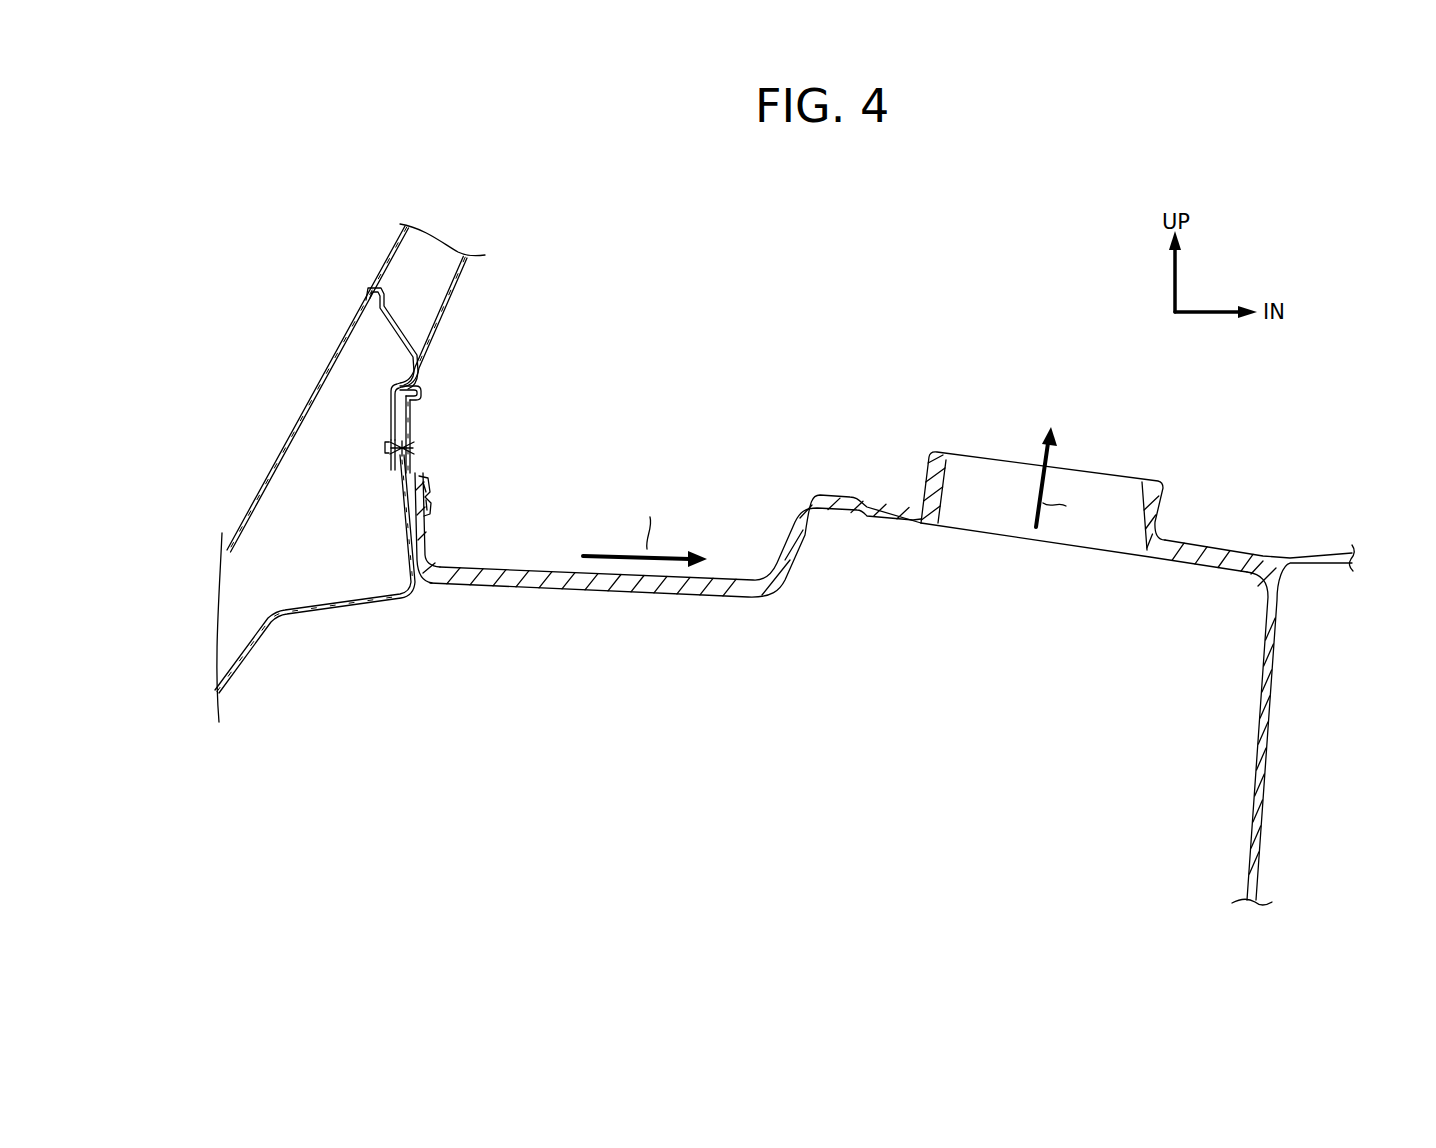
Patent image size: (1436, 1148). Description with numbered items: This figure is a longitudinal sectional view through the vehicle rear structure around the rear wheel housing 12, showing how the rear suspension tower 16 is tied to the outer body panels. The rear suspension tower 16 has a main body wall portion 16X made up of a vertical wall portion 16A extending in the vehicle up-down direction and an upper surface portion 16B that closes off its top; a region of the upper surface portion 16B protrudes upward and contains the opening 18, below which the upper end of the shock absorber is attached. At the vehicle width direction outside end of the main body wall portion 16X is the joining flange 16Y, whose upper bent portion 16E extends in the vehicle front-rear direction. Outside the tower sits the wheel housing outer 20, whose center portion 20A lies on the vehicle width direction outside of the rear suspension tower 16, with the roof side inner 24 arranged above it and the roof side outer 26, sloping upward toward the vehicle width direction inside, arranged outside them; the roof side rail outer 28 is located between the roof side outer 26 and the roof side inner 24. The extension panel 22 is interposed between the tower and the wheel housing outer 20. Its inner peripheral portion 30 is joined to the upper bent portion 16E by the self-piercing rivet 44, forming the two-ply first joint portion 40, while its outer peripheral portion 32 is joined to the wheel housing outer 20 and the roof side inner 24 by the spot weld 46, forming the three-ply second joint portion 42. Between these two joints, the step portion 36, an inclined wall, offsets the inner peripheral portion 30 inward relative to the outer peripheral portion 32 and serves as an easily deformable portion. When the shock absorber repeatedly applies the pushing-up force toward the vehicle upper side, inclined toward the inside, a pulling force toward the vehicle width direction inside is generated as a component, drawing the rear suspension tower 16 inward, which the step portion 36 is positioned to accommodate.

The rear wheel housing 12 is at (691, 754).
The rear suspension tower 16 is at (902, 637).
The vertical wall portion 16A is at (1262, 785).
The upper surface portion 16B is at (622, 592).
The upper bent portion 16E is at (432, 537).
The main body wall portion 16X is at (909, 700).
The joining flange 16Y is at (504, 528).
The opening 18 is at (950, 463).
The wheel housing outer 20 is at (290, 574).
The center portion 20A is at (401, 504).
The extension panel 22 is at (426, 393).
The roof side inner 24 is at (447, 322).
The roof side outer 26 is at (306, 404).
The roof side rail outer 28 is at (388, 336).
The inner peripheral portion 30 is at (410, 537).
The outer peripheral portion 32 is at (412, 422).
The step portion 36 is at (408, 466).
The first joint portion 40 is at (432, 503).
The second joint portion 42 is at (397, 447).
The self-piercing rivet 44 is at (489, 495).
The spot weld 46 is at (343, 464).